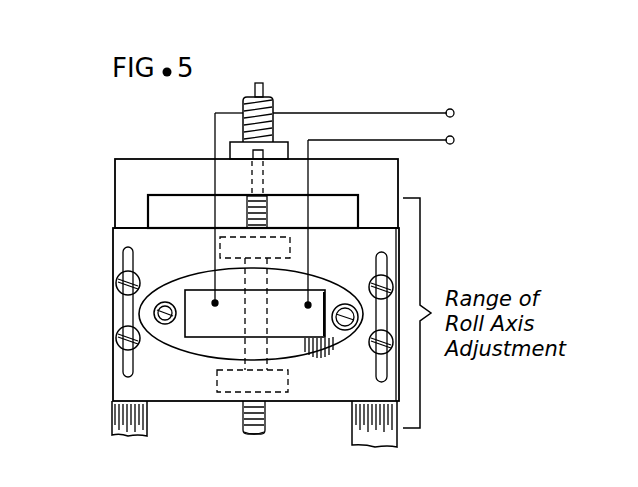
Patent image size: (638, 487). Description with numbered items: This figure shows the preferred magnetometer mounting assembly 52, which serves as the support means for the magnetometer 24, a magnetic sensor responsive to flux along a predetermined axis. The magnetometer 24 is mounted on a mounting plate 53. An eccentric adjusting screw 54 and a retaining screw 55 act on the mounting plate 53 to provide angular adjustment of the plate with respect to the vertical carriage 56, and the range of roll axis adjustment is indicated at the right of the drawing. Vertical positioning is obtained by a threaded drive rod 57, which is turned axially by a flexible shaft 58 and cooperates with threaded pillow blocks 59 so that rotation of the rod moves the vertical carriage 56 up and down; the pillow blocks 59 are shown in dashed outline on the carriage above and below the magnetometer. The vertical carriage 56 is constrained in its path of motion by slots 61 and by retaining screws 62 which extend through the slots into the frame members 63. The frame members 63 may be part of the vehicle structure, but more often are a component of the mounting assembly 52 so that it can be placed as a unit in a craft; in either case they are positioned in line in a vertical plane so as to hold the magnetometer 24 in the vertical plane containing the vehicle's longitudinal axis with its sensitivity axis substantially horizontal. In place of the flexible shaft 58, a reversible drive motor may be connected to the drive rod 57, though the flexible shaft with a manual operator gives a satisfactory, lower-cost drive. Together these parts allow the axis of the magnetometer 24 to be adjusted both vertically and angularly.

The magnetometer 24 is at (226, 327).
The magnetometer mounting assembly 52 is at (192, 146).
The mounting plate 53 is at (215, 362).
The eccentric adjusting screw 54 is at (363, 296).
The retaining screw 55 is at (161, 324).
The vertical carriage 56 is at (277, 403).
The threaded drive rod 57 is at (257, 437).
The flexible shaft 58 is at (277, 105).
The threaded pillow blocks 59 is at (275, 233).
The slots 61 is at (132, 257).
The retaining screws 62 is at (116, 283).
The frame members 63 is at (115, 192).